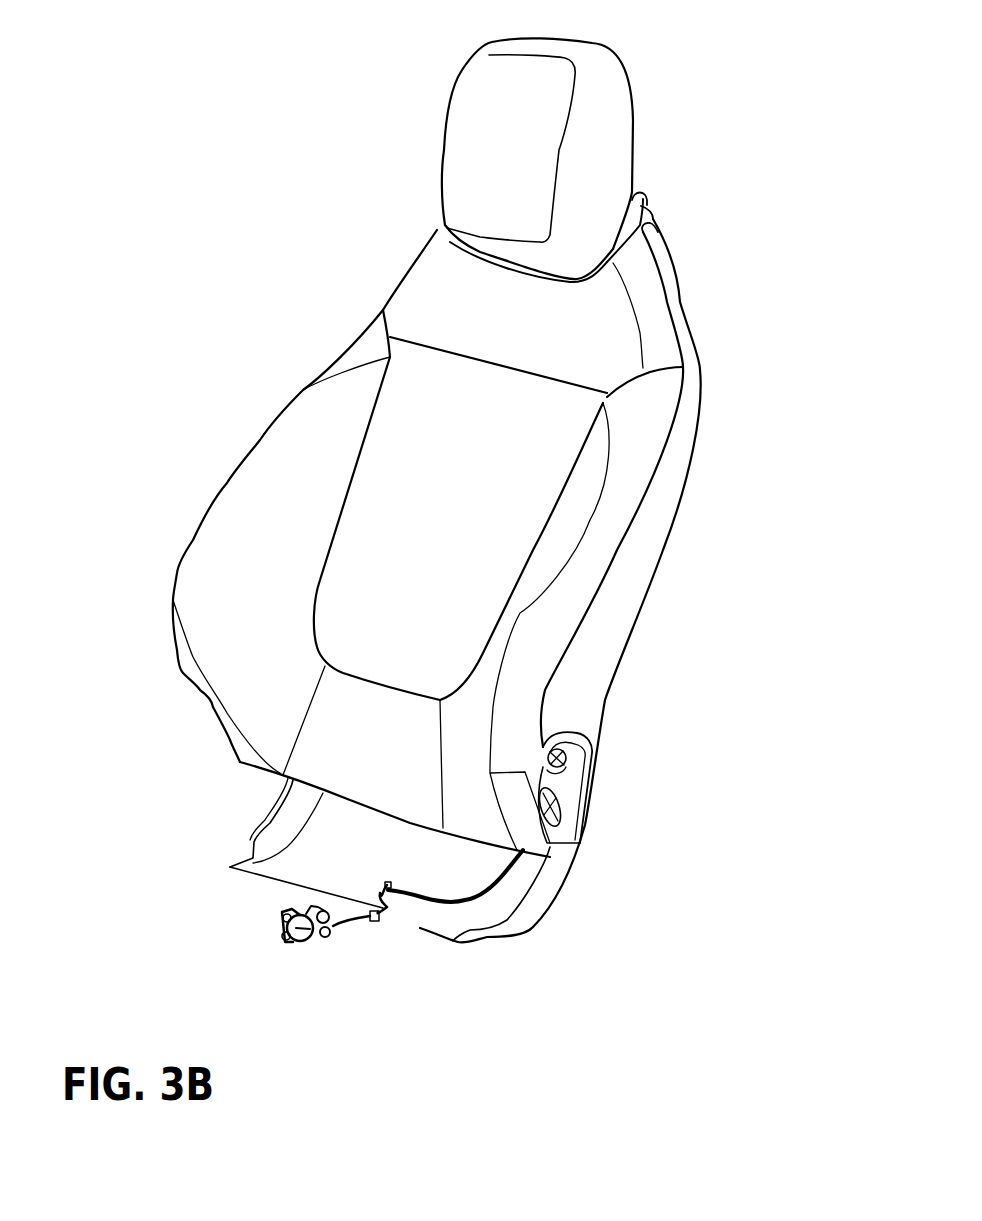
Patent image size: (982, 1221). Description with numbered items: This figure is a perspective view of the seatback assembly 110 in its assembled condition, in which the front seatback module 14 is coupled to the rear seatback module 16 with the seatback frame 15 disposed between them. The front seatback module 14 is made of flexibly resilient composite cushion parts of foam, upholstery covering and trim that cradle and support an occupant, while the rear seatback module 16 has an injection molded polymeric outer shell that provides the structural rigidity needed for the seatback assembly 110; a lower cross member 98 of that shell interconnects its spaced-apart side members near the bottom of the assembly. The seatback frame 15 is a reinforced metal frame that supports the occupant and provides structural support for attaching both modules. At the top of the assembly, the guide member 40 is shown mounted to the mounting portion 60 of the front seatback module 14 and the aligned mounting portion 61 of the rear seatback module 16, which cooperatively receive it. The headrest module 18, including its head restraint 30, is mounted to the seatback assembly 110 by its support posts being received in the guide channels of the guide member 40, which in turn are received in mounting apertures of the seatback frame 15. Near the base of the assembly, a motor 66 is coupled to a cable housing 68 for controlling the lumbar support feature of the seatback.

The seatback assembly 110 is at (350, 240).
The front seatback module 14 is at (236, 437).
The rear seatback module 16 is at (732, 336).
The headrest module 18 is at (652, 102).
The head restraint 30 is at (462, 127).
The guide member 40 is at (645, 195).
The mounting portion 61 is at (653, 220).
The mounting portion 60 is at (630, 250).
The seatback frame 15 is at (567, 783).
The lower cross member 98 is at (320, 848).
The cable housing 68 is at (433, 900).
The motor 66 is at (266, 915).